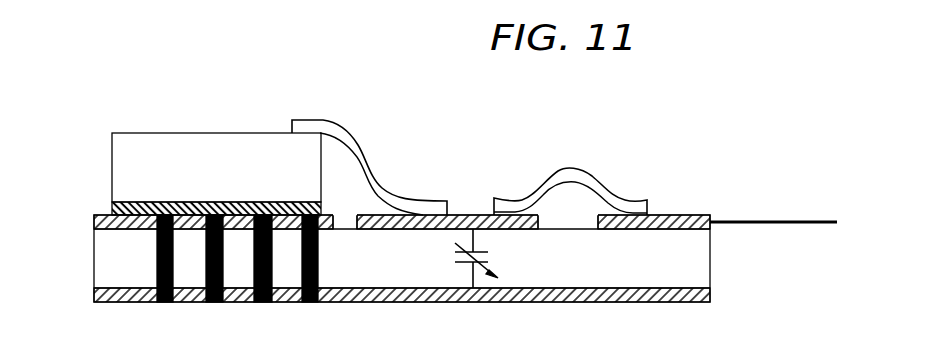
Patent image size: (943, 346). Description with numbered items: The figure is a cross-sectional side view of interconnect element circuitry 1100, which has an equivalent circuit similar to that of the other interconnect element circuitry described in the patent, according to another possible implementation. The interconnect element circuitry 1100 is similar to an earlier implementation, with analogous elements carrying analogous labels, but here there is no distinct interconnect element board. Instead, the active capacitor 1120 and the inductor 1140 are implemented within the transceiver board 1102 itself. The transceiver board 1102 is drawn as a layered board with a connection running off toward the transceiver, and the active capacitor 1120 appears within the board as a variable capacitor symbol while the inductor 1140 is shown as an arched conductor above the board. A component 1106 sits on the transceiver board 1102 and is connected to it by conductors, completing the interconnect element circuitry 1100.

The interconnect element circuitry 1100 is at (585, 90).
The transceiver board 1102 is at (712, 217).
The chip / component 1106 is at (180, 133).
The active capacitor 1120 is at (455, 255).
The inductor 1140 is at (594, 170).